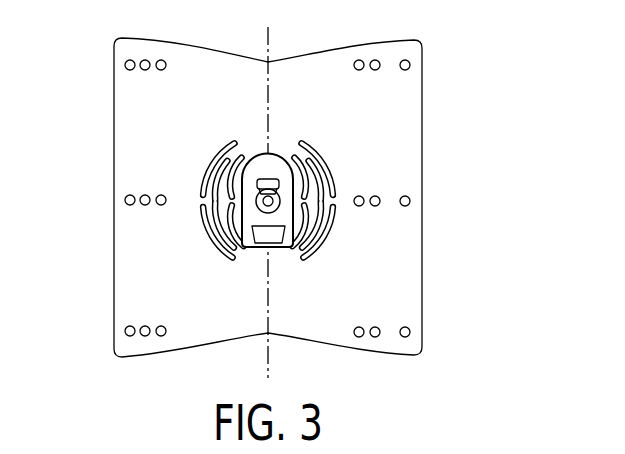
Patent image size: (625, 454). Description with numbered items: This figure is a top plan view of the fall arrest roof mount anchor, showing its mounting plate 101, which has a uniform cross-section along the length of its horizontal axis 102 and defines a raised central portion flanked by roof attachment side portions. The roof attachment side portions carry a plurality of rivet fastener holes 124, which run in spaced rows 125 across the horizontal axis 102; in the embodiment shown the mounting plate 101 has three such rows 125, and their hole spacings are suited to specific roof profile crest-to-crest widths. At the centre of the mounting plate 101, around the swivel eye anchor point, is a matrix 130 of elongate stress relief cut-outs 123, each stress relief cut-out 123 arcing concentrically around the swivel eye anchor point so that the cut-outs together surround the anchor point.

The mounting plate 101 is at (422, 138).
The horizontal axis 102 is at (272, 47).
The stress relief cut-out 123 is at (210, 150).
The rivet fastener hole 124 is at (409, 61).
The row 125 is at (447, 65).
The matrix 130 is at (232, 138).